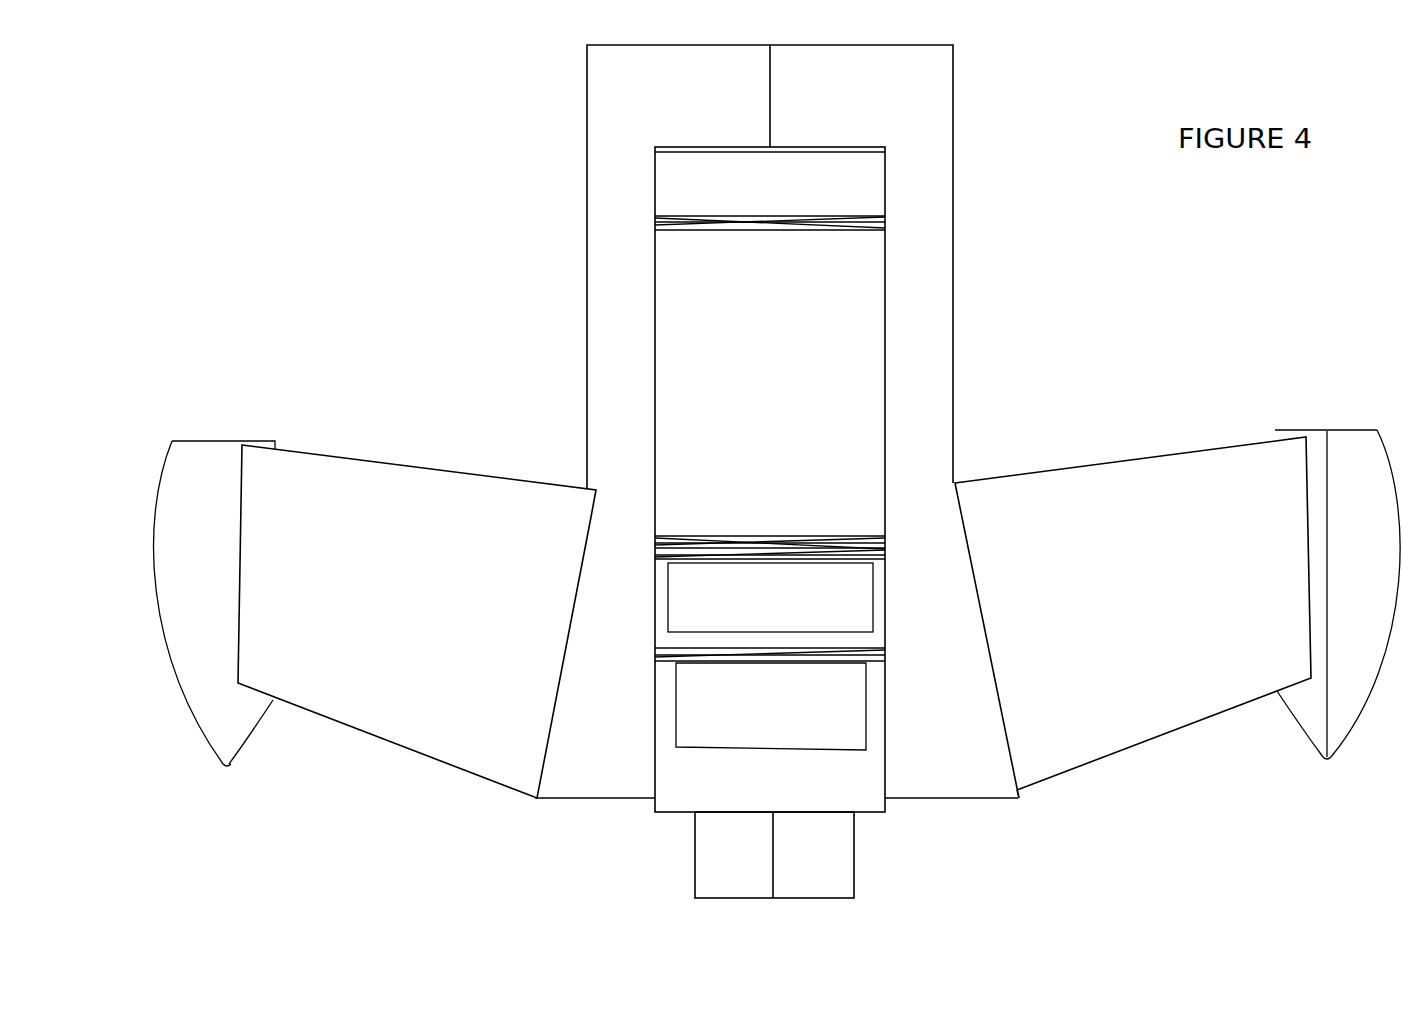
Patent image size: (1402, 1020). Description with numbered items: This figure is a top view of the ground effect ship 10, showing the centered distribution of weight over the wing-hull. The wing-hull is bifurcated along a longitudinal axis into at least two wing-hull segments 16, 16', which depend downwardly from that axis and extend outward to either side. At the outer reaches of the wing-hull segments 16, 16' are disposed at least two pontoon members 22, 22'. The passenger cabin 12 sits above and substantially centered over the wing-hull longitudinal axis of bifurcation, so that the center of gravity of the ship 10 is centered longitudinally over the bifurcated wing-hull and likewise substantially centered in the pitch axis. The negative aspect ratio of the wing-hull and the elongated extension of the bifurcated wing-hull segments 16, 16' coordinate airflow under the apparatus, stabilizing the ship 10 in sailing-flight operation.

The ground effect ship 10 is at (542, 471).
The passenger cabin 12 is at (889, 297).
The wing-hull segment 16 is at (417, 575).
The wing-hull segment 16' is at (1133, 584).
The pontoon member 22 is at (244, 633).
The pontoon member 22' is at (1309, 642).